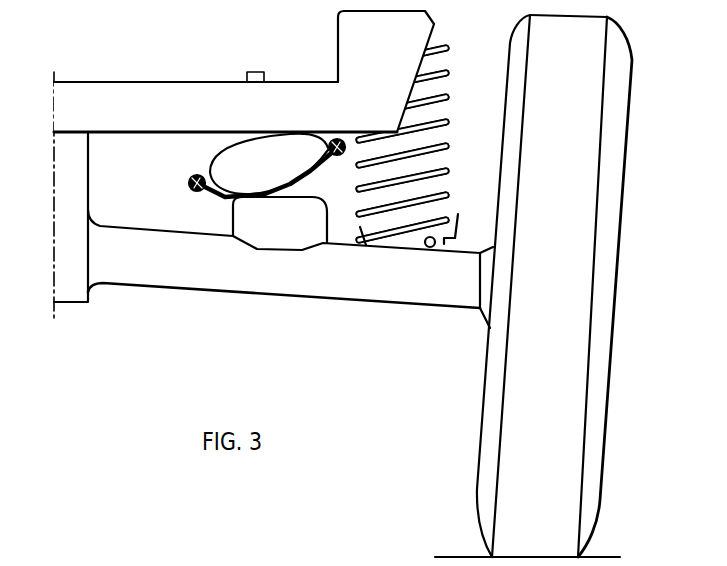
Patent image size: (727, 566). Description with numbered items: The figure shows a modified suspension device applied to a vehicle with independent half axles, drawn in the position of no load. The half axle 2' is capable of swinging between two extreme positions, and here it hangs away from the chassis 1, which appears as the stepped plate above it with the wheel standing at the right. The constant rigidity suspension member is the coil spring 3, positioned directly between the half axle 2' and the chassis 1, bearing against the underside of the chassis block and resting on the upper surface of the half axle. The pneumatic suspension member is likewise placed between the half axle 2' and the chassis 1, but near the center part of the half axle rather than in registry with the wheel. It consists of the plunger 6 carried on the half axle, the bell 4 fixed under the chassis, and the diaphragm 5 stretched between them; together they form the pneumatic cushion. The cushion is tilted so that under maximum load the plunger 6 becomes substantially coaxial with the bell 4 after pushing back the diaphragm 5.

The chassis 1 is at (113, 93).
The half axle 2' is at (273, 230).
The coil spring 3 is at (434, 127).
The bell 4 is at (210, 163).
The diaphragm 5 is at (222, 202).
The plunger 6 is at (305, 207).